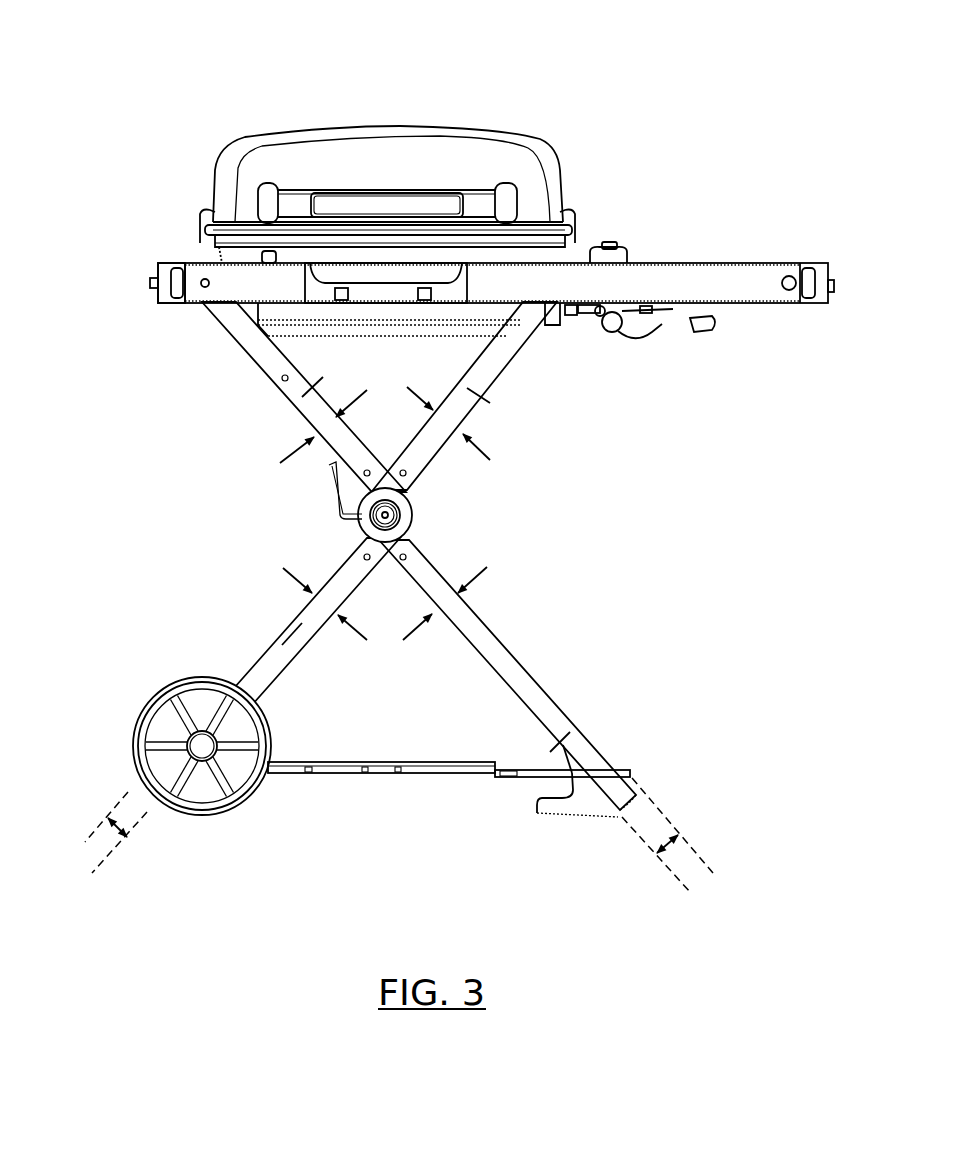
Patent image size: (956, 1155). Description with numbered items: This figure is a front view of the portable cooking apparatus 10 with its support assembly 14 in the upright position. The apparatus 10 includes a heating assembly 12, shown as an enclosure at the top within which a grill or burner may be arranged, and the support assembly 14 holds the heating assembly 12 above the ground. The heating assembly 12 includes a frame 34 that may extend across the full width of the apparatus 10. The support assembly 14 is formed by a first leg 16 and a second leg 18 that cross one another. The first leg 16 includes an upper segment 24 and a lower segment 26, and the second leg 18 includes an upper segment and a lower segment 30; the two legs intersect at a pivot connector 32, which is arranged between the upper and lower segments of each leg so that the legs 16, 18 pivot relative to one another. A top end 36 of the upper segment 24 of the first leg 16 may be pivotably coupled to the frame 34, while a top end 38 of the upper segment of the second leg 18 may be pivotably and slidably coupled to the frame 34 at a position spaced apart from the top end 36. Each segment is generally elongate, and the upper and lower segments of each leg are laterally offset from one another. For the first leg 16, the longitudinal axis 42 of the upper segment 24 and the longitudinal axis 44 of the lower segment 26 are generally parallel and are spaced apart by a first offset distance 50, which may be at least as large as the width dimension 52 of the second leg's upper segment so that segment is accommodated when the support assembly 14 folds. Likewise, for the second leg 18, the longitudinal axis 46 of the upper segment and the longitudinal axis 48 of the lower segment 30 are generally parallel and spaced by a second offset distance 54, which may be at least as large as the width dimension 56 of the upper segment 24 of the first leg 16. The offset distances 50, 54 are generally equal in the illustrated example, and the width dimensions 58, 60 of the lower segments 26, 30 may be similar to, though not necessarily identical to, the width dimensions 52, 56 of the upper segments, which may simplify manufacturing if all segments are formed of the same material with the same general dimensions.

The portable cooking apparatus 10 is at (202, 117).
The heating assembly 12 is at (563, 119).
The support assembly 14 is at (250, 499).
The first leg 16 is at (553, 707).
The second leg 18 is at (241, 677).
The upper segment of the first leg 24 is at (305, 395).
The lower segment of the first leg 26 is at (495, 662).
The lower segment of the second leg 30 is at (290, 645).
The pivot connector 32 is at (420, 517).
The frame 34 is at (703, 263).
The top end of the upper segment of the first leg 36 is at (193, 305).
The top end of the upper segment of the second leg 38 is at (576, 326).
The longitudinal axis of the upper segment of the first leg 42 is at (655, 807).
The longitudinal axis of the lower segment of the first leg 44 is at (637, 830).
The longitudinal axis of the upper segment of the second leg 46 is at (118, 802).
The longitudinal axis of the lower segment of the second leg 48 is at (137, 820).
The first offset distance 50 is at (677, 851).
The width dimension of the upper segment of the second leg 52 is at (483, 443).
The second offset distance 54 is at (110, 834).
The width dimension of the upper segment of the first leg 56 is at (290, 446).
The width dimension of the lower segment of the first leg 58 is at (500, 583).
The width dimension of the lower segment of the second leg 60 is at (283, 570).